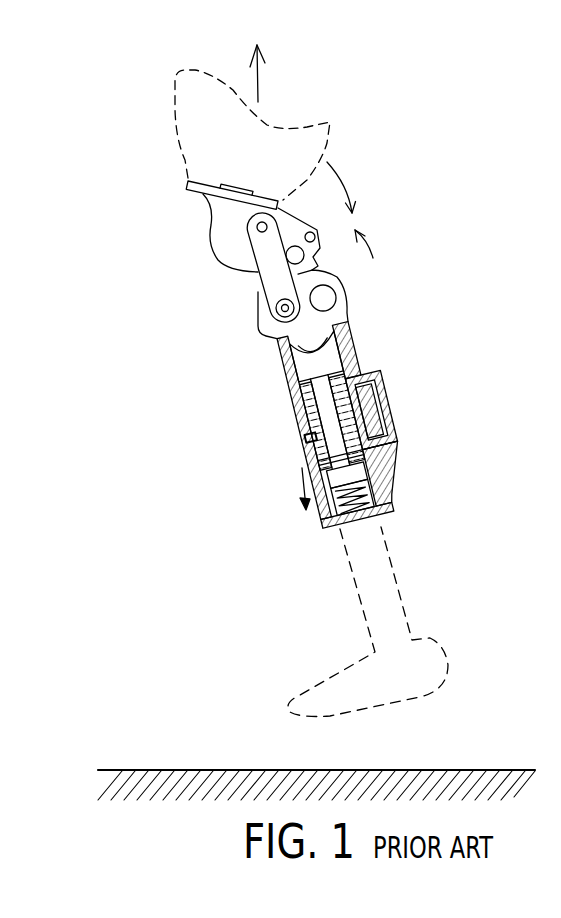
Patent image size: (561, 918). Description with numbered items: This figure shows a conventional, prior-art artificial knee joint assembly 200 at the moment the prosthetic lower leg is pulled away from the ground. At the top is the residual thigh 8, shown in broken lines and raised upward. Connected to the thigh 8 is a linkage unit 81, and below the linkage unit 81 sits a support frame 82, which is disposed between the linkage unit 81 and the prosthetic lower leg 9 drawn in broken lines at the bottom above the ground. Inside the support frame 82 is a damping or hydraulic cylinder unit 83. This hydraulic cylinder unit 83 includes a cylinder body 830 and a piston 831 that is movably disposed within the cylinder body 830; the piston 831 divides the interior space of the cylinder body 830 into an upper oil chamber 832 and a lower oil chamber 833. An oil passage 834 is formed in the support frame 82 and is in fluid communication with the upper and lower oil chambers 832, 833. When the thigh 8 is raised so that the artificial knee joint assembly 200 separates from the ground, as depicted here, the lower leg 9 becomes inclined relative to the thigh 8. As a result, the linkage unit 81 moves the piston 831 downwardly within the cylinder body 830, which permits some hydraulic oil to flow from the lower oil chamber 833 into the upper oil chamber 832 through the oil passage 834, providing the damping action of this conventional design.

The residual thigh 8 is at (195, 132).
The linkage unit 81 is at (268, 280).
The support frame 82 is at (279, 372).
The hydraulic cylinder unit 83 is at (323, 366).
The upper oil chamber 832 is at (314, 417).
The lower oil chamber 833 is at (330, 457).
The oil passage 834 is at (388, 408).
The piston 831 is at (303, 439).
The cylinder body 830 is at (390, 490).
The artificial knee joint assembly 200 is at (372, 323).
The prosthetic lower leg 9 is at (417, 642).